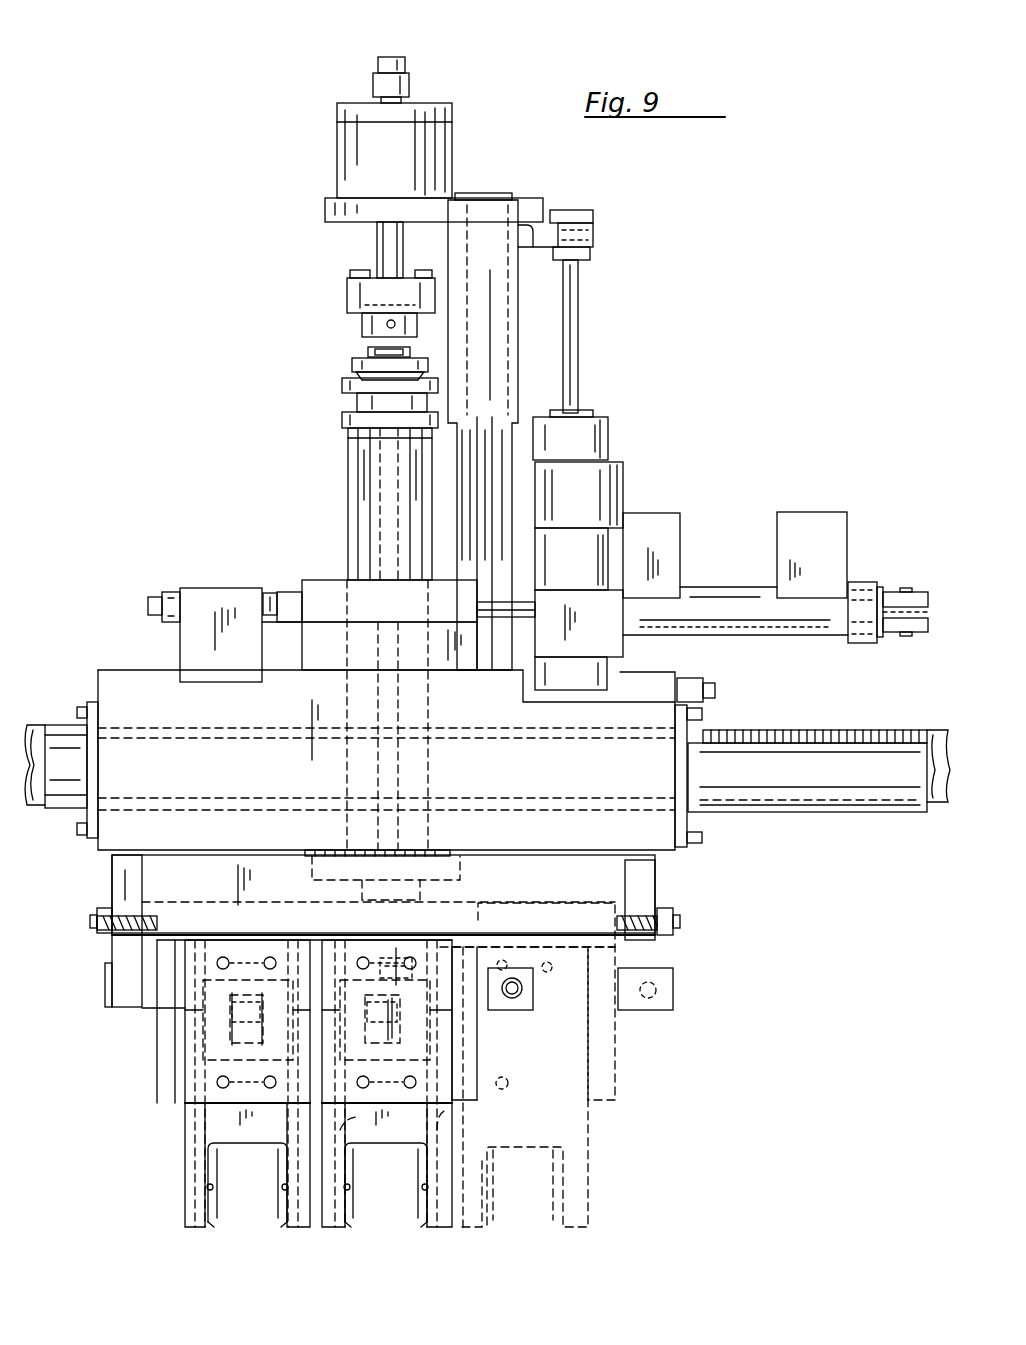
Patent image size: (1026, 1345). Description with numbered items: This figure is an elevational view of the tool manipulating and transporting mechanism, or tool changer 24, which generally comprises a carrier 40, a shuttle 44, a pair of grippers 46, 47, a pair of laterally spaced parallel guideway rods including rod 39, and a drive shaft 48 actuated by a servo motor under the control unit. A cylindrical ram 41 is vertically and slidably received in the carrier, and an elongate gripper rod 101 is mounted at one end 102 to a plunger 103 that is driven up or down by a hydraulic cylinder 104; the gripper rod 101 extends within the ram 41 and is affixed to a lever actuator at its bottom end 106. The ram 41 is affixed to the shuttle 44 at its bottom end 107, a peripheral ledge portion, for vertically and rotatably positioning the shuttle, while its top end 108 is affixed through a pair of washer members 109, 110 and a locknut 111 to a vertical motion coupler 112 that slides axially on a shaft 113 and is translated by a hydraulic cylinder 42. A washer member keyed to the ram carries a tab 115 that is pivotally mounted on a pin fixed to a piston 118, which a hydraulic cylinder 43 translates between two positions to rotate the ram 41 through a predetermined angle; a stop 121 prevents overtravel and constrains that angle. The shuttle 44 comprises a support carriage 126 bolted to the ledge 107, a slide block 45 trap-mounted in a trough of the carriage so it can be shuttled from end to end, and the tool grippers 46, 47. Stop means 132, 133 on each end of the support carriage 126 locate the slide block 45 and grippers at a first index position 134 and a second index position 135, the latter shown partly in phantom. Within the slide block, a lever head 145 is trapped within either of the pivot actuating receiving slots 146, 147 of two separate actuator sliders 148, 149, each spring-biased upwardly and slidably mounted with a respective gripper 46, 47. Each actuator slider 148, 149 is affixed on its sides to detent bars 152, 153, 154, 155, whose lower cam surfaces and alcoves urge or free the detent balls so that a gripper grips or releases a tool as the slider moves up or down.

The tool changer 24 is at (670, 198).
The guideway rod 39 is at (815, 748).
The carrier 40 is at (610, 790).
The cylindrical ram 41 is at (362, 491).
The hydraulic cylinder 42 is at (570, 552).
The hydraulic cylinder 43 is at (728, 607).
The shuttle 44 is at (662, 891).
The slide block 45 is at (482, 922).
The tool gripper 46 is at (190, 1150).
The tool gripper 47 is at (445, 1122).
The drive shaft 48 is at (870, 733).
The gripper rod 101 is at (378, 531).
The end of gripper rod 102 is at (367, 349).
The plunger 103 is at (385, 240).
The hydraulic cylinder 104 is at (360, 148).
The bottom end of gripper rod 106 is at (399, 955).
The bottom end of ram 107 is at (445, 860).
The top end of ram 108 is at (372, 438).
The washer member 109 is at (345, 385).
The washer member 110 is at (350, 414).
The locknut 111 is at (413, 362).
The vertical motion coupler 112 is at (503, 327).
The shaft 113 is at (478, 515).
The tab 115 is at (282, 605).
The piston 118 is at (490, 603).
The stop 121 is at (262, 603).
The support carriage 126 is at (200, 880).
The stop means 132 is at (92, 920).
The stop means 133 is at (676, 923).
The first index position 134 is at (434, 1228).
The second index position 135 is at (580, 1228).
The lever head 145 is at (452, 1027).
The pivot actuating receiving slot 146 is at (230, 1005).
The pivot actuating receiving slot 147 is at (440, 1058).
The actuator slider 148 is at (215, 1060).
The actuator slider 149 is at (478, 1084).
The detent bar 152 is at (192, 1120).
The detent bar 153 is at (247, 1185).
The detent bar 154 is at (386, 1185).
The detent bar 155 is at (437, 1122).